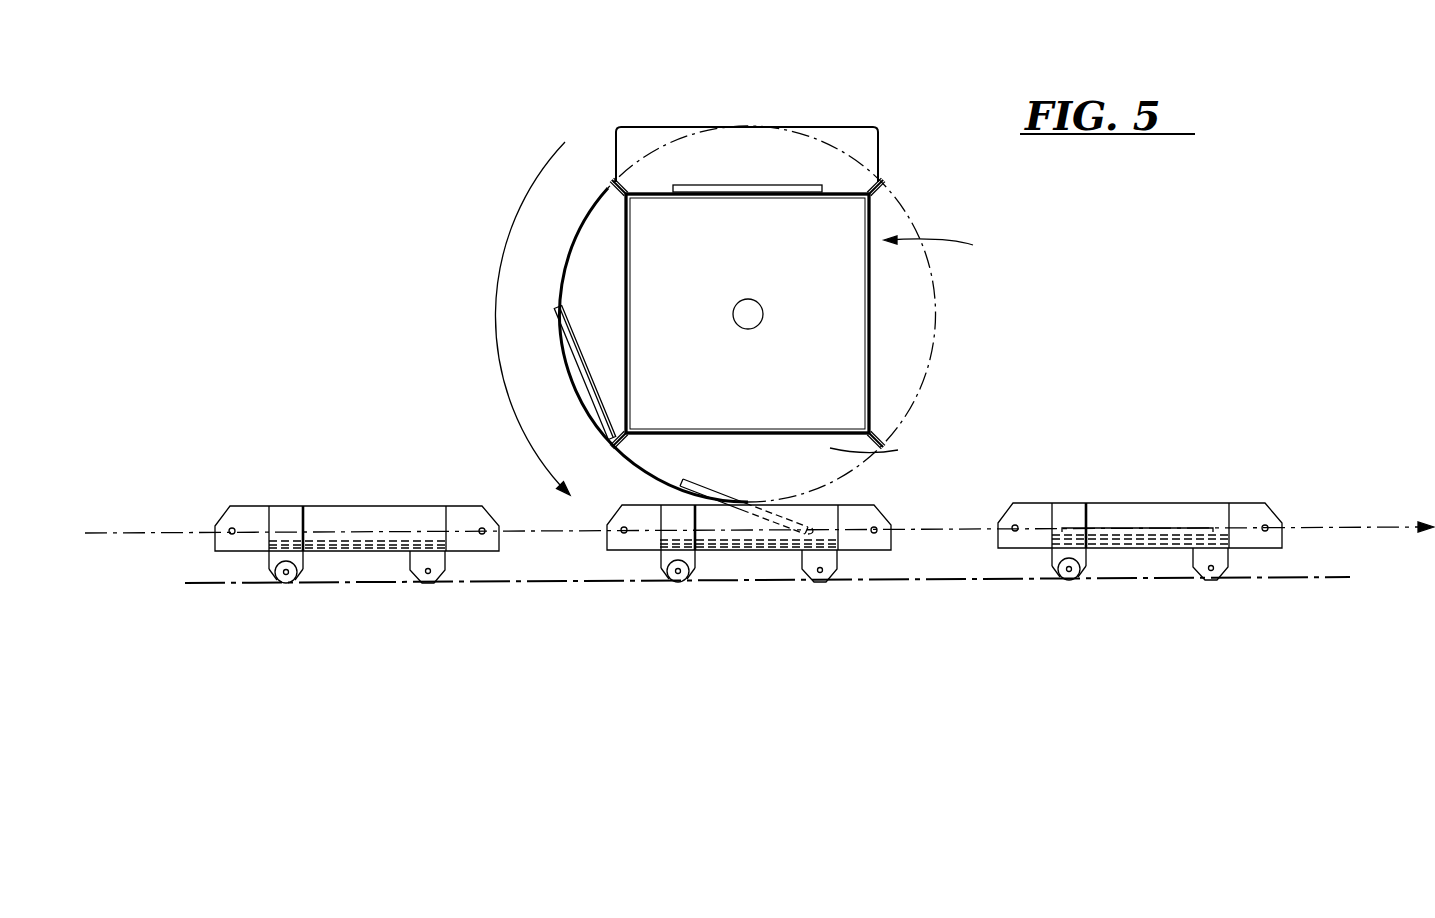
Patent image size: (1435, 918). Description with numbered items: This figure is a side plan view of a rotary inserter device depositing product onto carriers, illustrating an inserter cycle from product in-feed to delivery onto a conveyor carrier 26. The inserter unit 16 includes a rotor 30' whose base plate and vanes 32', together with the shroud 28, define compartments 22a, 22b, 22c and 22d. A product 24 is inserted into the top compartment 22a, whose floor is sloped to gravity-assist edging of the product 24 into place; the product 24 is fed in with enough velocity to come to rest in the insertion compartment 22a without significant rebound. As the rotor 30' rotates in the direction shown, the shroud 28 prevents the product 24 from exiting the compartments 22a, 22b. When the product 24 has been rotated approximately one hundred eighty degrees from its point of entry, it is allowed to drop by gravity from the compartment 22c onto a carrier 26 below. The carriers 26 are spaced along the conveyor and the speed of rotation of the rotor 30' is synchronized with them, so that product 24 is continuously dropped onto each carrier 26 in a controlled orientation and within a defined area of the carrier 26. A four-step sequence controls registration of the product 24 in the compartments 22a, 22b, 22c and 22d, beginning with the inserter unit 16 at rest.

The inserter unit 16 is at (760, 100).
The top compartment 22a is at (843, 177).
The compartment 22b is at (592, 252).
The compartment 22c is at (830, 480).
The compartment 22d is at (893, 313).
The product 24 is at (710, 185).
The conveyor carrier 26 is at (257, 522).
The shroud 28 is at (840, 127).
The rotor 30' is at (952, 251).
The vanes 32' is at (783, 275).